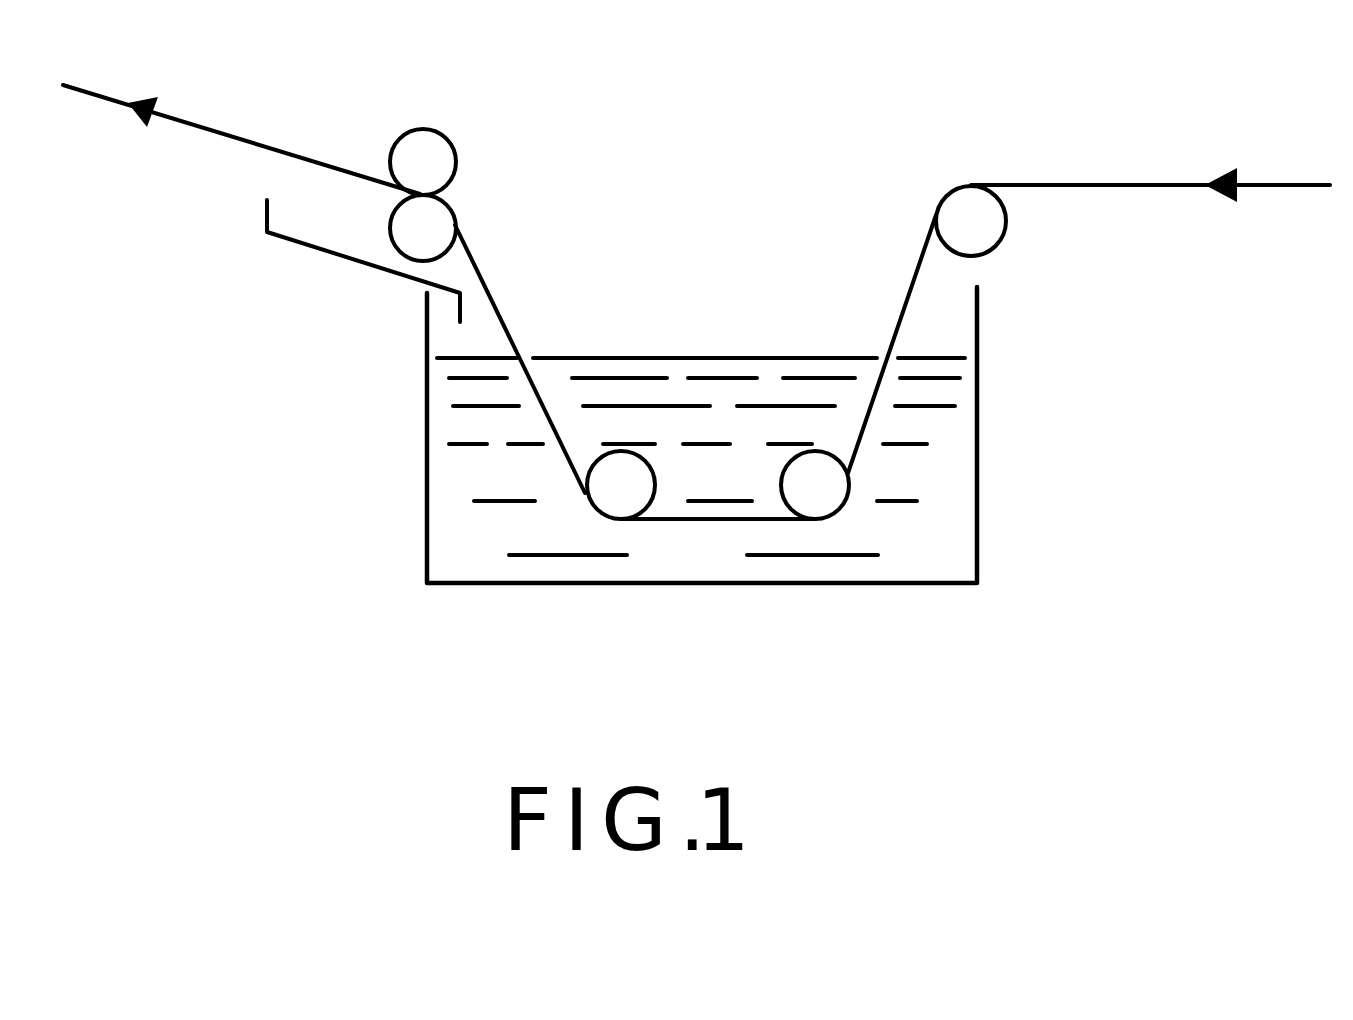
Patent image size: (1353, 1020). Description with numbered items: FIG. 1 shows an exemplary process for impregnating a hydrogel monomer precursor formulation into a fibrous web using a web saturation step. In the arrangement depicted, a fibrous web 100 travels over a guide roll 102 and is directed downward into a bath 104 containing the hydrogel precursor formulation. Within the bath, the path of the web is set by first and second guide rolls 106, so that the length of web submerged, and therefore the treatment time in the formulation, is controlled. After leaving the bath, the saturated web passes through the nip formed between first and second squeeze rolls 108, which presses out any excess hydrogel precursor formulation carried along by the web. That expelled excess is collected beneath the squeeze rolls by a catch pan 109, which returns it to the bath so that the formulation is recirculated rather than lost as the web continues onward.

The fibrous web 100 is at (1150, 187).
The guide roll 102 is at (1007, 240).
The bath 104 is at (985, 483).
The first and second guide rolls 106 is at (618, 496).
The first and second squeeze rolls 108 is at (432, 140).
The catch pan 109 is at (330, 258).